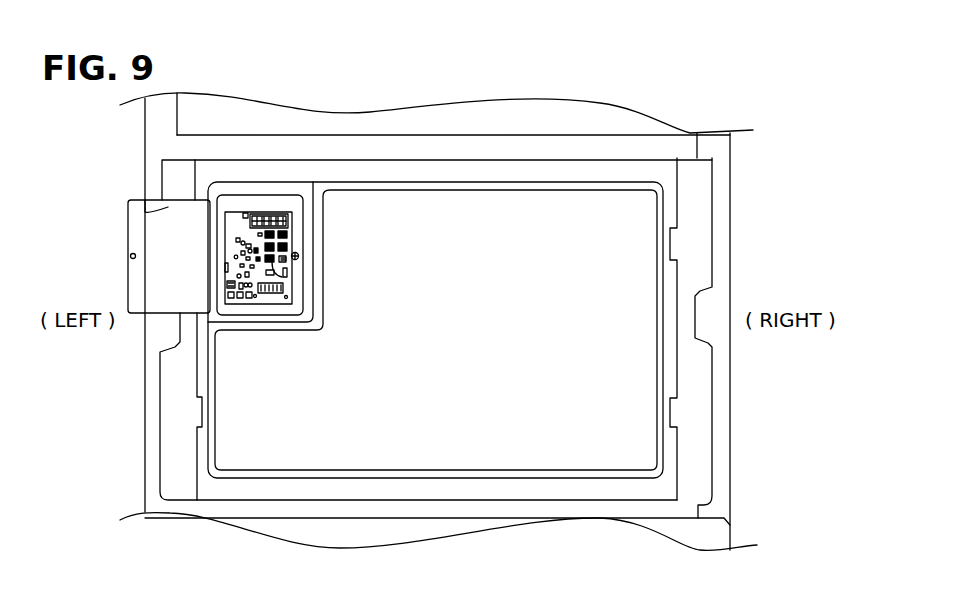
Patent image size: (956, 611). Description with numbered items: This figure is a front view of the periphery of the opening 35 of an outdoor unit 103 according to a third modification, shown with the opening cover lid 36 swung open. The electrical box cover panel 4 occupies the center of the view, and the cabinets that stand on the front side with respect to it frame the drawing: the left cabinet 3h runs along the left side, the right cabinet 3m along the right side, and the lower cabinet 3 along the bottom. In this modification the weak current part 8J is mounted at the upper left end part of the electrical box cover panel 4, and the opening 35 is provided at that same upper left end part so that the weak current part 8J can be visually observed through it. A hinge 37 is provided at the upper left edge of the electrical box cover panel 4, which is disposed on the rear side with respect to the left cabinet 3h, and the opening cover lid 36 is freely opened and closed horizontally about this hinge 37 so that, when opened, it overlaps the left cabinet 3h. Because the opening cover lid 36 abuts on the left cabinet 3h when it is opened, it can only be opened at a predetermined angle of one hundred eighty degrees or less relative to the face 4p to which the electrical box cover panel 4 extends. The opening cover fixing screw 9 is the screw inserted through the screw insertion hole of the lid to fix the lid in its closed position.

The outdoor unit 103 is at (752, 108).
The lower cabinet 3 is at (328, 535).
The left cabinet 3h is at (182, 382).
The right cabinet 3m is at (690, 237).
The electrical box cover panel 4 is at (255, 408).
The face 4p is at (307, 197).
The hinge 37 is at (218, 250).
The opening 35 is at (282, 245).
The weak current part 8J is at (224, 283).
The opening cover lid 36 is at (158, 238).
The opening cover fixing screw 9 is at (145, 200).